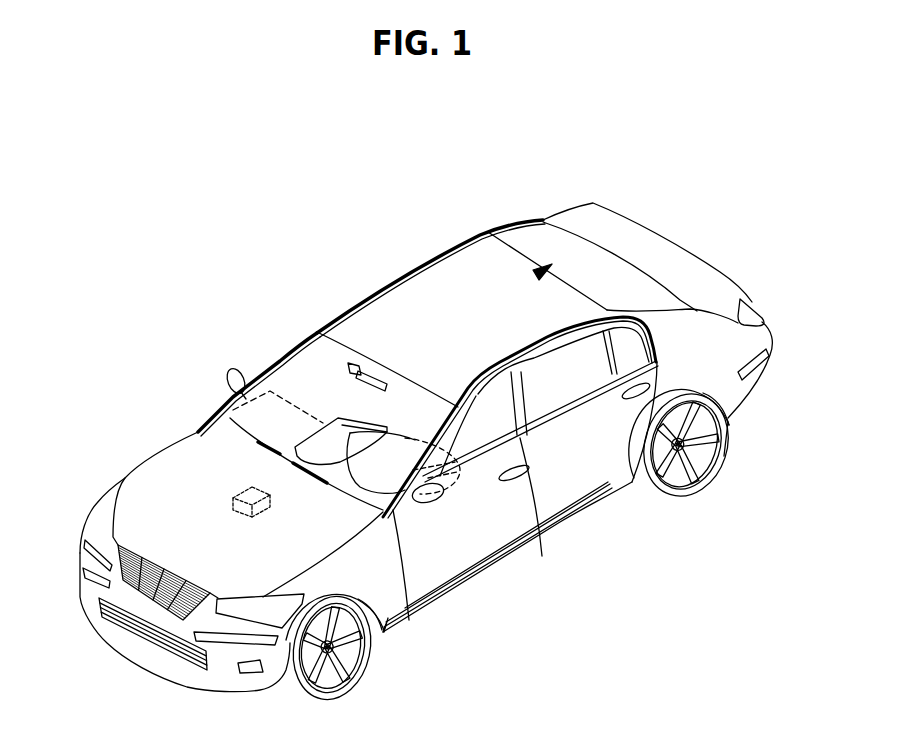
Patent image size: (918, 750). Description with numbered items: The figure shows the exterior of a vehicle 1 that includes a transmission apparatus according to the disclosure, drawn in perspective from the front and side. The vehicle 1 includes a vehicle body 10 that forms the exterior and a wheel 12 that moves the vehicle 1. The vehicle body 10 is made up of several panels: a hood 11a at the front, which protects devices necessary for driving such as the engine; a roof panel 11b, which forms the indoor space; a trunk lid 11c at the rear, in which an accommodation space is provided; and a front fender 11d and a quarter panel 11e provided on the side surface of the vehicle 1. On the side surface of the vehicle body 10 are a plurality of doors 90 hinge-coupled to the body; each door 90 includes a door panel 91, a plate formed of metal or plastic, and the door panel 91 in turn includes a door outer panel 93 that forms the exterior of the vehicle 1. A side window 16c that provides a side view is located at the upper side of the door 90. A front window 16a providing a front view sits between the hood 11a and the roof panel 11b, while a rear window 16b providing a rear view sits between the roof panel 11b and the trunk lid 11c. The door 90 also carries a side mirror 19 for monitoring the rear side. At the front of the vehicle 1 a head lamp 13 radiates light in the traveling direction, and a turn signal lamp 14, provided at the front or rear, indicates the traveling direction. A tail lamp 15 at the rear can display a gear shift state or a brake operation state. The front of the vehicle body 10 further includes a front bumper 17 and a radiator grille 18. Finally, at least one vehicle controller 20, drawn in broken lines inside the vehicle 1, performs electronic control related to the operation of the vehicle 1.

The vehicle 1 is at (275, 182).
The vehicle body 10 is at (448, 233).
The hood 11a is at (161, 478).
The roof panel 11b is at (411, 283).
The trunk lid 11c is at (655, 238).
The front fender 11d is at (389, 608).
The quarter panel 11e is at (727, 387).
The wheel 12 is at (342, 684).
The head lamp 13 is at (103, 510).
The turn signal lamp 14 is at (93, 567).
The tail lamp 15 is at (769, 306).
The front window 16a is at (305, 350).
The rear window 16b is at (514, 237).
The side window 16c is at (565, 385).
The front bumper 17 is at (180, 630).
The radiator grille 18 is at (150, 605).
The side mirror 19 is at (230, 369).
The vehicle controller 20 is at (252, 494).
The door 90 is at (518, 527).
The door panel 91 is at (470, 630).
The door outer panel 93 is at (481, 541).